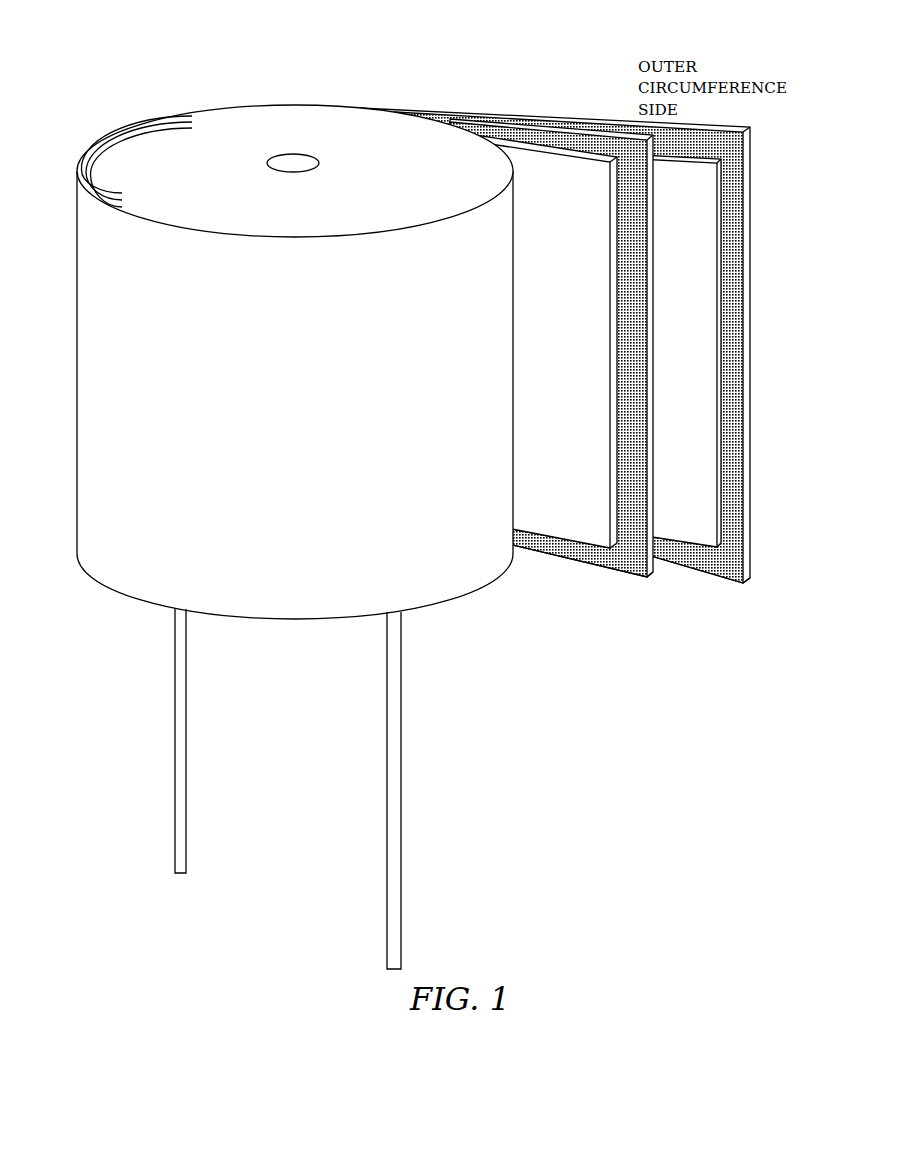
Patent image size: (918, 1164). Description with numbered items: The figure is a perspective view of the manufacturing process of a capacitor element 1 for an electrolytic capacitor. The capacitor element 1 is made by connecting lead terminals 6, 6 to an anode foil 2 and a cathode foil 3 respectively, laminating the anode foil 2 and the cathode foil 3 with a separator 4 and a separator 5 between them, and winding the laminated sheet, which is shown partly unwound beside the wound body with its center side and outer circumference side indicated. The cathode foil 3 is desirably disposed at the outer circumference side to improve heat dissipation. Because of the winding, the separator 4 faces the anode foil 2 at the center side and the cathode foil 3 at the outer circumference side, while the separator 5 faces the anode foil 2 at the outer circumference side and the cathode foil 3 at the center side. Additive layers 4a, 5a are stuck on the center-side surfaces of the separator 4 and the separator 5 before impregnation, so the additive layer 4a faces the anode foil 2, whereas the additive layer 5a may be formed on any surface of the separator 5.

The capacitor element 1 is at (372, 88).
The anode foil 2 is at (570, 522).
The cathode foil 3 is at (703, 530).
The separator 4 is at (652, 552).
The additive layer 4a is at (628, 557).
The separator 5 is at (750, 540).
The additive layer 5a is at (735, 558).
The lead terminals 6 is at (186, 771).